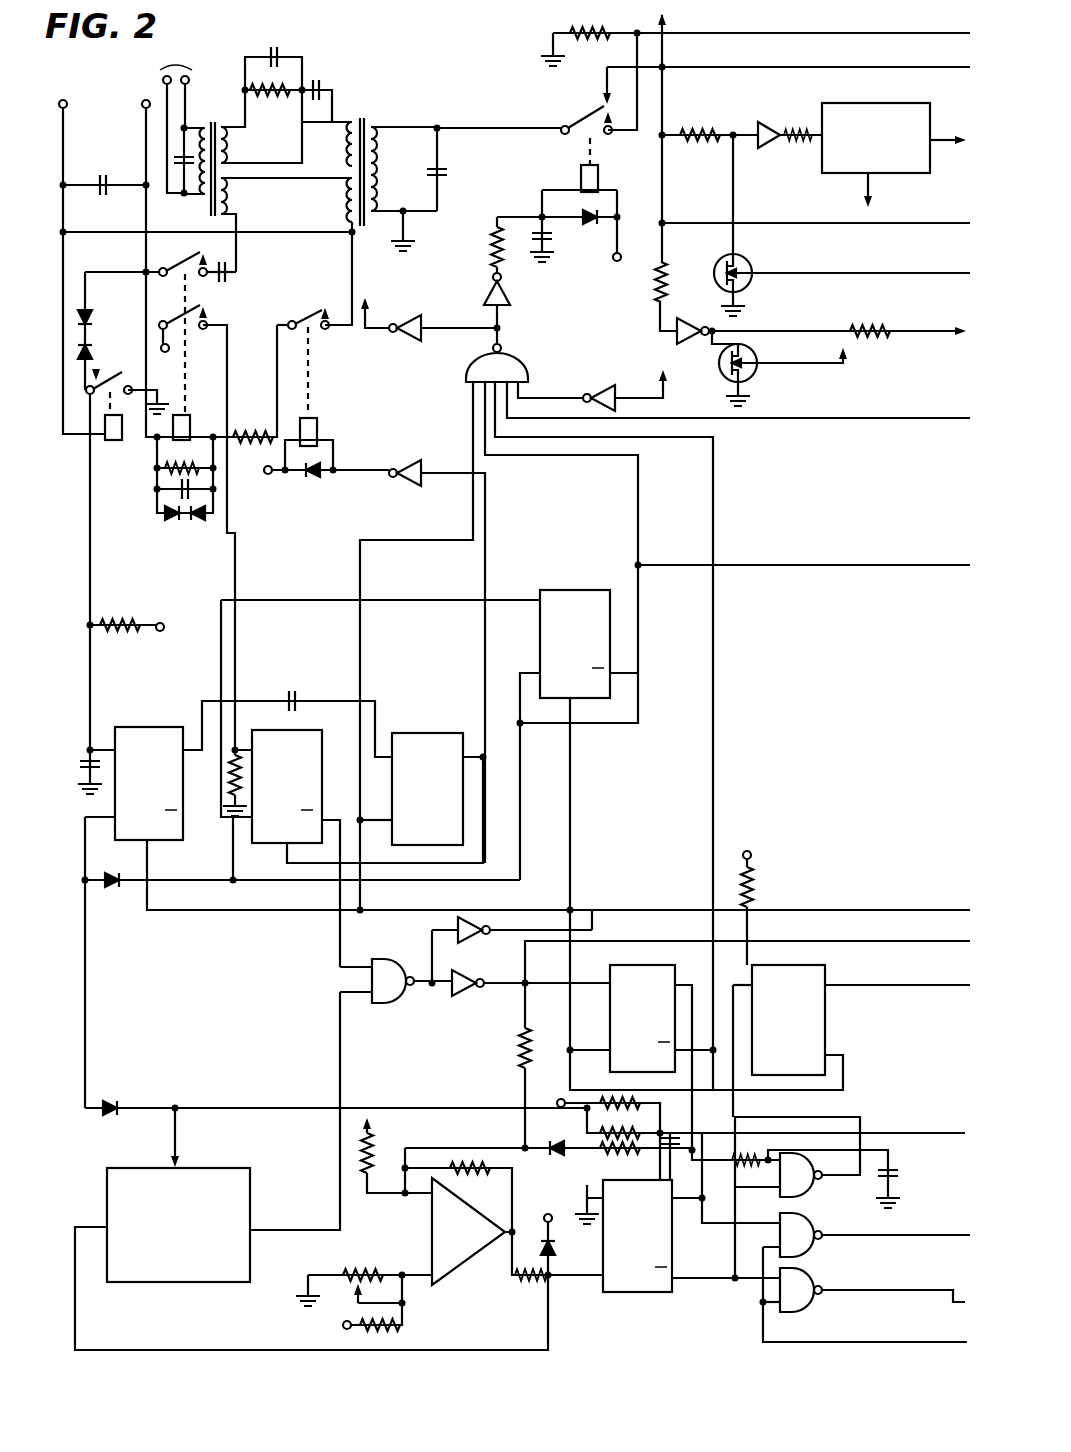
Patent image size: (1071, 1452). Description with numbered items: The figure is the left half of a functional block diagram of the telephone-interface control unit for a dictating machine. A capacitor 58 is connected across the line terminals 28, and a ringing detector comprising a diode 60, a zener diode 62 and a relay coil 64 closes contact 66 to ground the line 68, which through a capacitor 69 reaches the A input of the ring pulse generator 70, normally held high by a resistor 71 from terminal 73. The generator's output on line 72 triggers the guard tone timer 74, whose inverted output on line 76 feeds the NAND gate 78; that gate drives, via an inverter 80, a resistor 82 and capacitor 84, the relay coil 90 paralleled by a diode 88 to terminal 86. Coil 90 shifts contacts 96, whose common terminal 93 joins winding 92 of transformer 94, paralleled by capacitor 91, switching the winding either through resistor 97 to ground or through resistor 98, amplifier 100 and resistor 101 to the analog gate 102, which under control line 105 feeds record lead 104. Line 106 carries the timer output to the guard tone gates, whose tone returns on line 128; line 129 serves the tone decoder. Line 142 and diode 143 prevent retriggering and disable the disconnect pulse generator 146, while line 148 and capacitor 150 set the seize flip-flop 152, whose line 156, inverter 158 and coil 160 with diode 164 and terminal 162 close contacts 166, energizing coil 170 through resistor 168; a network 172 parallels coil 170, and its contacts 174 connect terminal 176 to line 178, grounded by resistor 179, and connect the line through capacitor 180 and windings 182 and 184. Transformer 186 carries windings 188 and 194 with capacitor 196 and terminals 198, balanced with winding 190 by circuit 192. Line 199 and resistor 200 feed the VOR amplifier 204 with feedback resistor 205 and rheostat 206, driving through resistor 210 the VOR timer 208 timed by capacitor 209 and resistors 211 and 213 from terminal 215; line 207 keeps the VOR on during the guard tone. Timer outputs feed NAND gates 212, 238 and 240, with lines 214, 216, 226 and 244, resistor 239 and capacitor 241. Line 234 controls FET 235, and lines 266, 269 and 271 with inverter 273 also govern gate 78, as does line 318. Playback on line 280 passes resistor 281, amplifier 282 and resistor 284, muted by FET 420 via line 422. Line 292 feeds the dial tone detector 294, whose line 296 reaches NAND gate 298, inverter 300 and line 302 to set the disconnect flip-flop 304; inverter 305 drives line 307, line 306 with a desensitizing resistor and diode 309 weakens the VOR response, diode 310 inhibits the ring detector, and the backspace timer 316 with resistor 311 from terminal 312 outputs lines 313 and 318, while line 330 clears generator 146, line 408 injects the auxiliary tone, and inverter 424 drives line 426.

The terminals 28 is at (150, 86).
The capacitor 58 is at (100, 180).
The diode 60 is at (92, 318).
The zener diode 62 is at (92, 348).
The relay coil 64 is at (112, 442).
The contact 66 is at (96, 368).
The line 68 is at (93, 556).
The capacitor 69 is at (85, 766).
The monostable multivibrator 70 is at (150, 725).
The resistor 71 is at (135, 618).
The line 72 is at (402, 604).
The terminal 73 is at (162, 634).
The monostable multivibrator 74 is at (590, 588).
The line 76 is at (636, 512).
The NAND gate 78 is at (480, 360).
The inverter 80 is at (486, 302).
The resistor 82 is at (492, 246).
The capacitor 84 is at (540, 256).
The terminal 86 is at (612, 264).
The diode 88 is at (590, 226).
The relay coil 90 is at (580, 178).
The capacitor 91 is at (445, 180).
The winding 92 is at (381, 168).
The common terminal 93 is at (560, 126).
The transformer 94 is at (370, 122).
The contacts 96 is at (590, 104).
The resistor 97 is at (575, 30).
The resistor 98 is at (692, 128).
The amplifier 100 is at (770, 120).
The resistor 101 is at (798, 148).
The analog gate 102 is at (900, 88).
The output lead 104 is at (948, 145).
The control line 105 is at (872, 192).
The line 106 is at (880, 565).
The line 128 is at (848, 35).
The line 129 is at (892, 68).
The line 142 is at (535, 788).
The diode 143 is at (110, 890).
The monostable multivibrator 146 is at (292, 732).
The line 148 is at (262, 700).
The capacitor 150 is at (298, 694).
The R S flip-flop 152 is at (425, 733).
The line 156 is at (488, 536).
The inverter 158 is at (408, 488).
The coil 160 is at (320, 428).
The terminal 162 is at (268, 476).
The diode 164 is at (316, 478).
The contacts 166 is at (328, 308).
The resistor 168 is at (258, 428).
The coil 170 is at (192, 418).
The network 172 is at (150, 500).
The contacts 174 is at (220, 312).
The terminal 176 is at (198, 345).
The line 178 is at (237, 553).
The resistor 179 is at (228, 780).
The capacitor 180 is at (228, 278).
The winding 182 is at (232, 196).
The winding 184 is at (345, 215).
The transformer 186 is at (228, 108).
The winding 188 is at (230, 134).
The winding 190 is at (340, 118).
The circuit 192 is at (315, 58).
The winding 194 is at (208, 198).
The capacitor 196 is at (180, 158).
The terminals 198 is at (199, 120).
The line 199 is at (680, 27).
The resistor 200 is at (364, 1172).
The operational amplifier 204 is at (458, 1258).
The feedback resistor 205 is at (476, 1160).
The rheostat 206 is at (350, 1270).
The line 207 is at (525, 962).
The monostable multivibrator 208 is at (638, 1294).
The capacitor 209 is at (518, 1052).
The resistor 210 is at (520, 1288).
The resistor 211 is at (624, 1152).
The NAND gate 212 is at (810, 1244).
The resistor 213 is at (622, 1108).
The line 214 is at (913, 1340).
The terminal 215 is at (556, 1102).
The line 216 is at (900, 1233).
The line 226 is at (902, 1133).
The line 234 is at (895, 274).
The field effect transistor 235 is at (752, 265).
The NAND gate 238 is at (810, 1188).
The resistor 239 is at (750, 1162).
The NAND gate 240 is at (802, 1304).
The capacitor 241 is at (893, 1172).
The output line 244 is at (930, 1290).
The line 266 is at (895, 420).
The line 269 is at (555, 395).
The input line 271 is at (664, 400).
The inverter 273 is at (640, 368).
The line 280 is at (930, 340).
The resistor 281 is at (874, 322).
The amplifier 282 is at (682, 277).
The resistor 284 is at (655, 312).
The output line 292 is at (433, 1352).
The dial tone detector unit 294 is at (215, 1176).
The line 296 is at (308, 1228).
The NAND gate 298 is at (385, 1003).
The inverter 300 is at (460, 1000).
The line 302 is at (512, 990).
The flip-flop 304 is at (670, 968).
The inverter 305 is at (452, 924).
The line 306 is at (698, 1005).
The line 307 is at (905, 912).
The diode 309 is at (248, 1104).
The diode 310 is at (115, 1098).
The resistor 311 is at (752, 895).
The terminal 312 is at (752, 856).
The line 313 is at (938, 990).
The multivibrator 316 is at (828, 1028).
The line 318 is at (233, 912).
The line 330 is at (496, 806).
The line 408 is at (900, 223).
The FET 420 is at (756, 380).
The line 422 is at (820, 373).
The inverter 424 is at (405, 342).
The line 426 is at (368, 306).